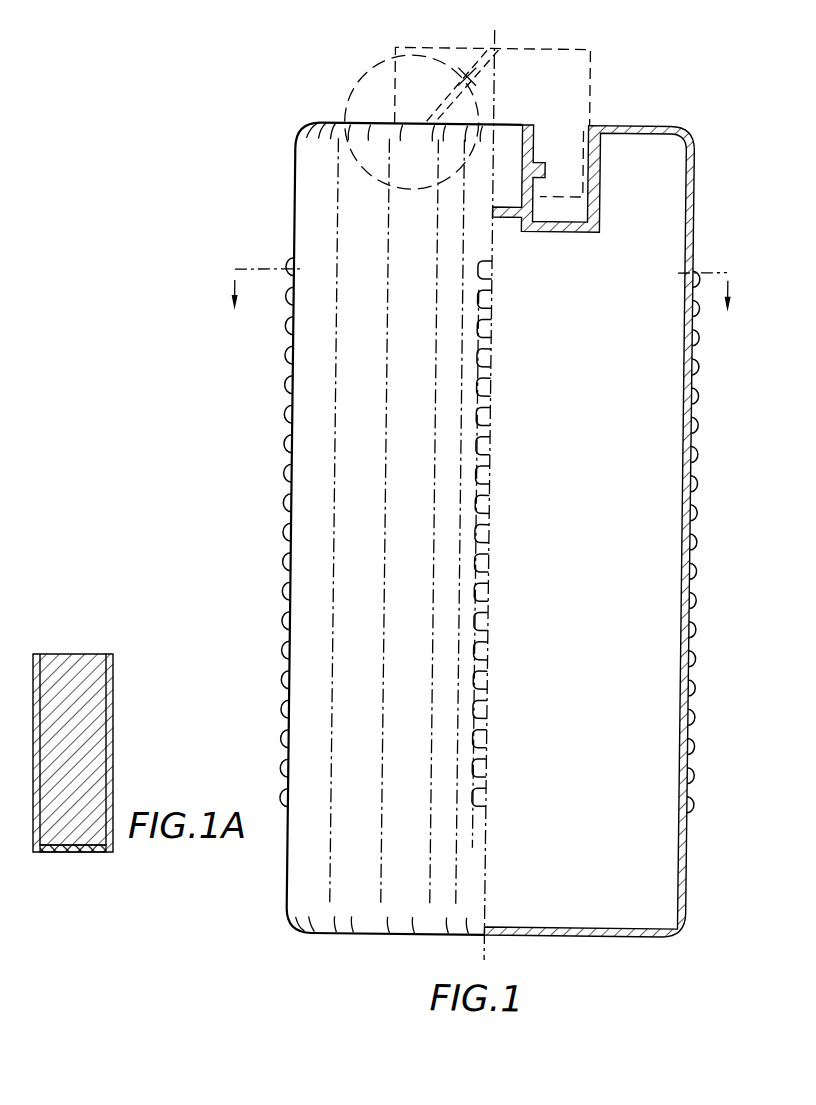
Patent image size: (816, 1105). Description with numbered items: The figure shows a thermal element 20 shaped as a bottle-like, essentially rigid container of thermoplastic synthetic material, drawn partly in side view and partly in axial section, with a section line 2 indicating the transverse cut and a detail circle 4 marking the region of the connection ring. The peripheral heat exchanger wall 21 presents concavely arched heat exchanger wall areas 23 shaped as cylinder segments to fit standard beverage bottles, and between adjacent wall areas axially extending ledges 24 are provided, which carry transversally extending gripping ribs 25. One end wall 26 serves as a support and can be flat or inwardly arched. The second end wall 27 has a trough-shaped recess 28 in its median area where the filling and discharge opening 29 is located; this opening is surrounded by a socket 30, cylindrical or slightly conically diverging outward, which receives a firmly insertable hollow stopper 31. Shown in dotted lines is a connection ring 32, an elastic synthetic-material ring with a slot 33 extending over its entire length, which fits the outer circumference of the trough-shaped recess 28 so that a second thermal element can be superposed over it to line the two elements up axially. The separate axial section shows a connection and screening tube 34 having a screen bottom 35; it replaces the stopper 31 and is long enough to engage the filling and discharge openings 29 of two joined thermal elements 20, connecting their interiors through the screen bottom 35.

In FIG. 1, the section line 2- 2 is at (481, 278).
In FIG. 1, the detail circle (FIG. 4 region) 4 is at (343, 70).
In FIG. 1, the thermal element 20 is at (692, 120).
In FIG. 1, the heat exchanger wall 21 is at (688, 498).
In FIG. 1, the heat exchanger wall area 23 is at (318, 482).
In FIG. 1, the ledge 24 is at (289, 457).
In FIG. 1, the gripping rib 25 is at (286, 357).
In FIG. 1, the end wall 26 is at (608, 936).
In FIG. 1, the second end wall 27 is at (632, 124).
In FIG. 1, the trough-shaped recess 28 is at (583, 212).
In FIG. 1, the filling and discharge opening 29 is at (504, 226).
In FIG. 1, the socket 30 is at (544, 228).
In FIG. 1, the hollow stopper 31 is at (506, 140).
In FIG. 1, the connection ring 32 is at (565, 69).
In FIG. 1, the slot 33 is at (459, 58).
In FIG. 1A, the connection and screening tube 34 is at (108, 712).
In FIG. 1A, the screen bottom 35 is at (97, 853).